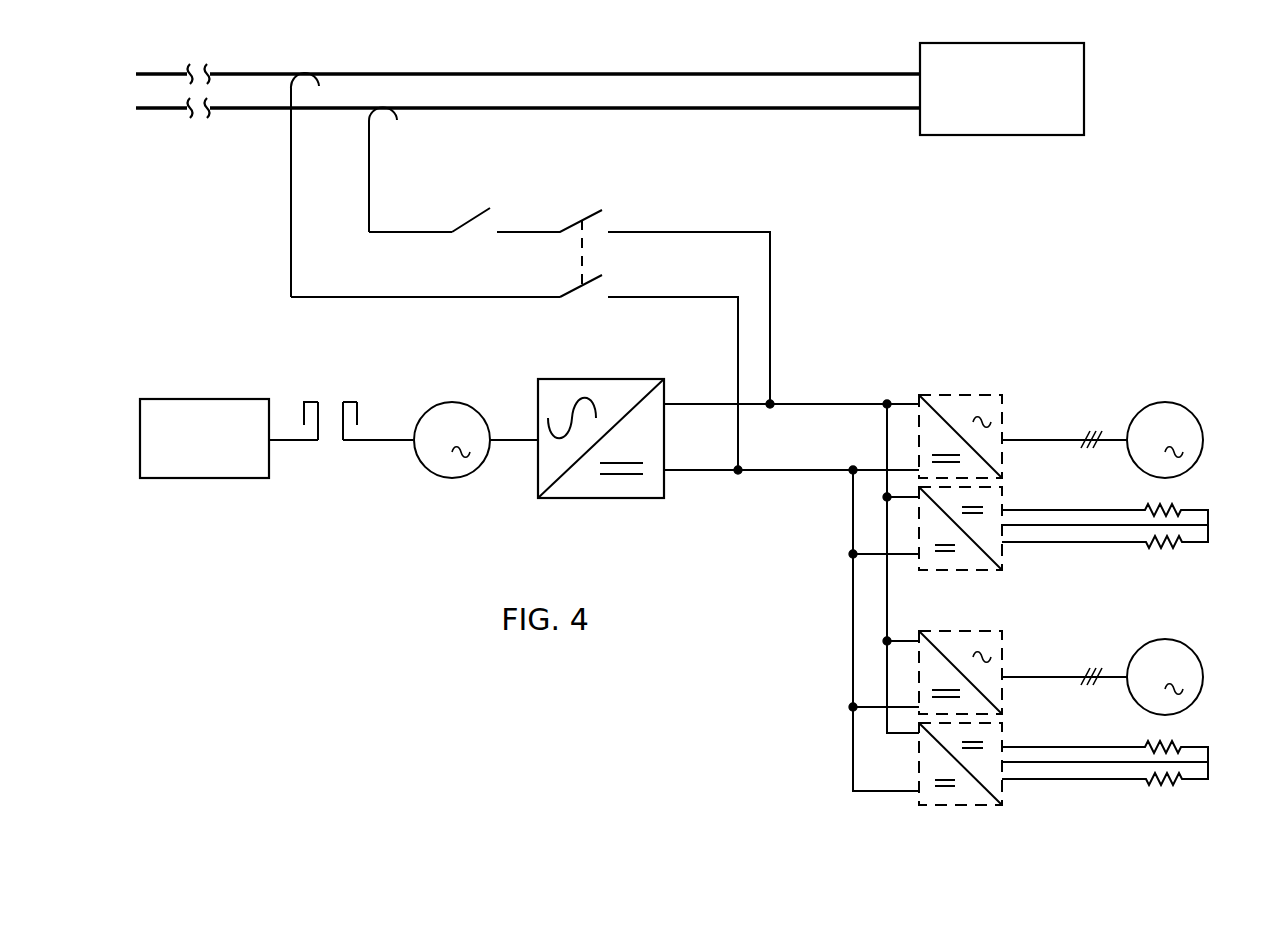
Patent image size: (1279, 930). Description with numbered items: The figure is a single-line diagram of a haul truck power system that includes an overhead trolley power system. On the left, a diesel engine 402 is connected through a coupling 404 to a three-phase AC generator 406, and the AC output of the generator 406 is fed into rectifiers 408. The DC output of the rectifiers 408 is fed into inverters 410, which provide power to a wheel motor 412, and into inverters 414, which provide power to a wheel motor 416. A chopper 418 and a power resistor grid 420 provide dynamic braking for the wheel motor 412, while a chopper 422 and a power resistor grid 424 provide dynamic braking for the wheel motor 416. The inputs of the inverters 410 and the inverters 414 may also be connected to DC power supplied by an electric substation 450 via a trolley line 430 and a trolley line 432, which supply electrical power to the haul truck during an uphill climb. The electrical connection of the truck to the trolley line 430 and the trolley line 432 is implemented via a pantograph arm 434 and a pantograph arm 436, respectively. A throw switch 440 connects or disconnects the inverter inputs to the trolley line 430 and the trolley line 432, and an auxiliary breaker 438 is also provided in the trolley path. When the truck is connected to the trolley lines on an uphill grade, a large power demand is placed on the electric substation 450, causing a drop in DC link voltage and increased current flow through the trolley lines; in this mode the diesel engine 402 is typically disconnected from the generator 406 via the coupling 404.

The diesel engine 402 is at (204, 453).
The coupling 404 is at (341, 436).
The 3-phase AC generator 406 is at (476, 455).
The rectifiers 408 is at (728, 454).
The inverters 410 is at (984, 434).
The wheel motor 412 is at (1126, 440).
The inverters 414 is at (983, 671).
The wheel motor 416 is at (1124, 677).
The chopper 418 is at (960, 541).
The power resistor grid 420 is at (1105, 542).
The chopper 422 is at (960, 777).
The power resistor grid 424 is at (1105, 778).
The trolley line 430 is at (528, 66).
The trolley line 432 is at (528, 118).
The pantograph arm 434 is at (404, 185).
The pantograph arm 436 is at (410, 169).
The auxiliary breaker 438 is at (611, 306).
The throw switch 440 is at (649, 372).
The electric substation 450 is at (1002, 103).